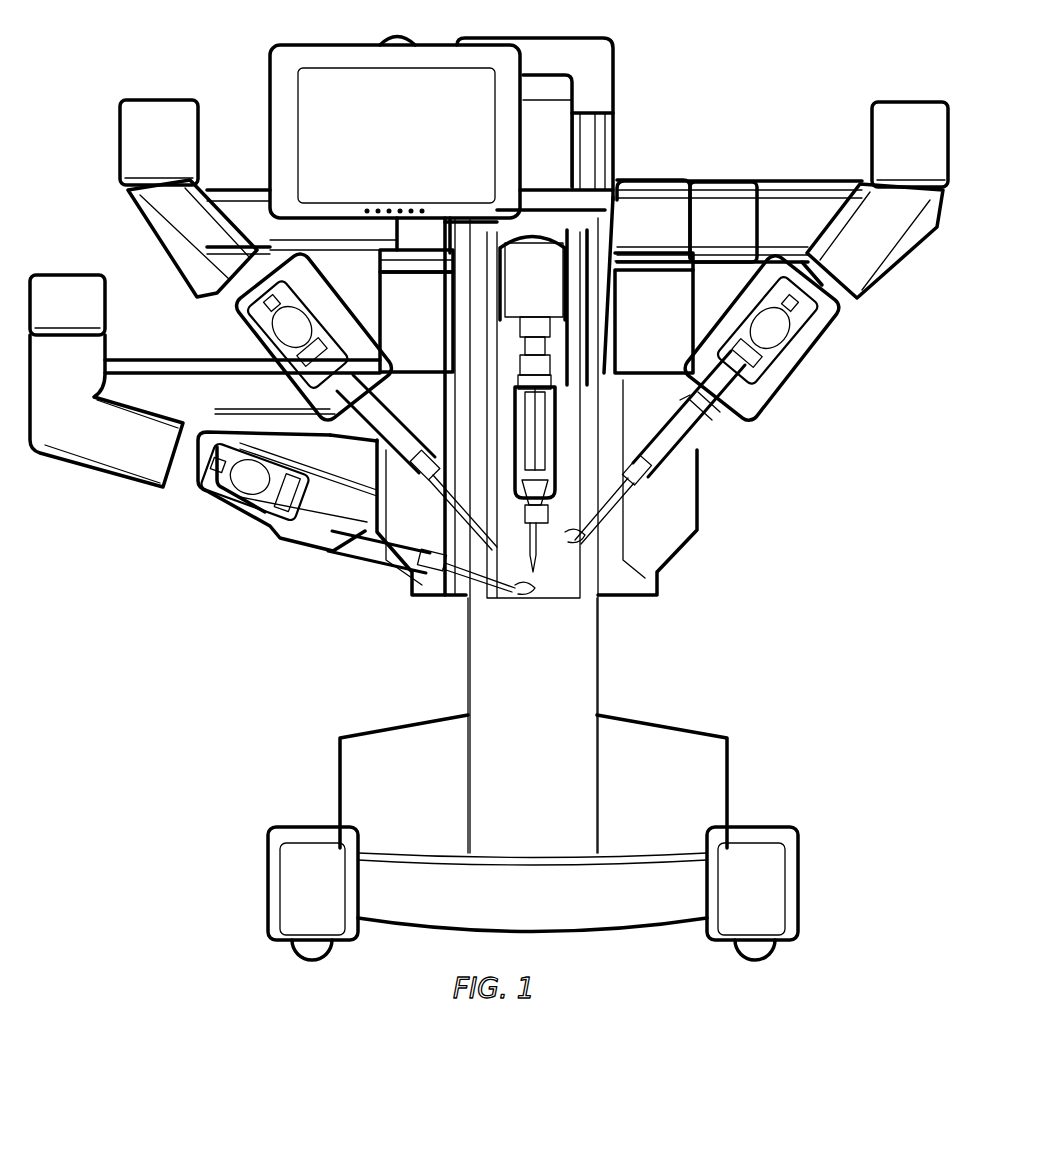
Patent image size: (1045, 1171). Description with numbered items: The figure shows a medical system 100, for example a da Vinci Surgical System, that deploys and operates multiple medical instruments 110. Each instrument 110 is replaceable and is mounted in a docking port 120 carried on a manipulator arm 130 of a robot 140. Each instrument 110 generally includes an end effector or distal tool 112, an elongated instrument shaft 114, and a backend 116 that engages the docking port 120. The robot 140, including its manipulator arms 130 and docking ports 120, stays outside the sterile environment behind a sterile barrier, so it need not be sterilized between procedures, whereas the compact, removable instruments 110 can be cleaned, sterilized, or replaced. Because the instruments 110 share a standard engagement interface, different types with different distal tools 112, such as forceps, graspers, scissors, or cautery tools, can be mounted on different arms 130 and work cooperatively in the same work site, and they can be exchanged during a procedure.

The medical system 100 is at (252, 22).
The medical instrument 110 is at (696, 437).
The distal tool 112 is at (523, 598).
The instrument shaft 114 is at (700, 390).
The backend 116 is at (758, 328).
The docking port 120 is at (818, 340).
The manipulator arm 130 is at (175, 232).
The robot 140 is at (552, 756).